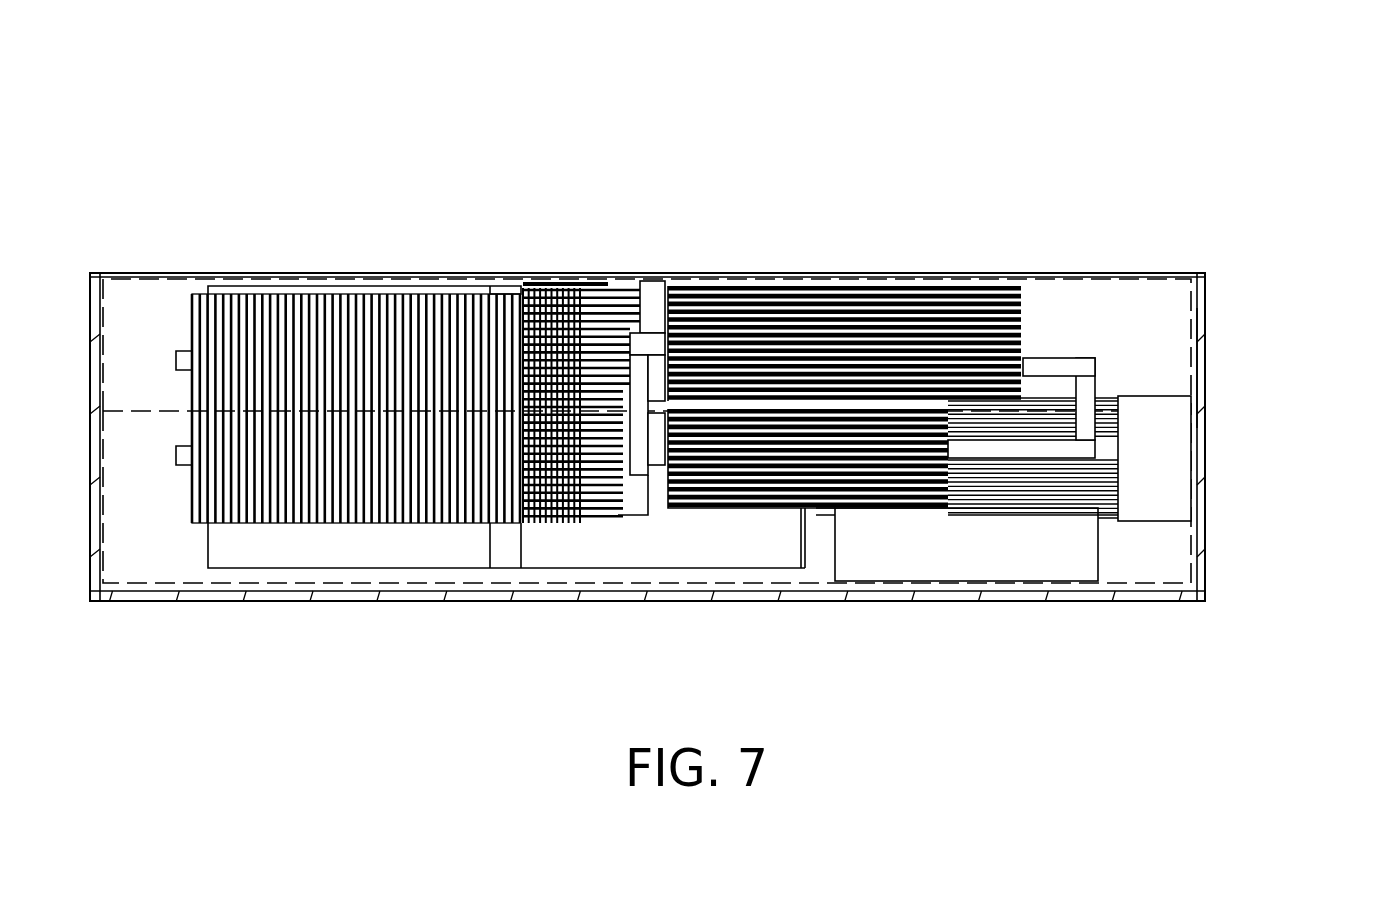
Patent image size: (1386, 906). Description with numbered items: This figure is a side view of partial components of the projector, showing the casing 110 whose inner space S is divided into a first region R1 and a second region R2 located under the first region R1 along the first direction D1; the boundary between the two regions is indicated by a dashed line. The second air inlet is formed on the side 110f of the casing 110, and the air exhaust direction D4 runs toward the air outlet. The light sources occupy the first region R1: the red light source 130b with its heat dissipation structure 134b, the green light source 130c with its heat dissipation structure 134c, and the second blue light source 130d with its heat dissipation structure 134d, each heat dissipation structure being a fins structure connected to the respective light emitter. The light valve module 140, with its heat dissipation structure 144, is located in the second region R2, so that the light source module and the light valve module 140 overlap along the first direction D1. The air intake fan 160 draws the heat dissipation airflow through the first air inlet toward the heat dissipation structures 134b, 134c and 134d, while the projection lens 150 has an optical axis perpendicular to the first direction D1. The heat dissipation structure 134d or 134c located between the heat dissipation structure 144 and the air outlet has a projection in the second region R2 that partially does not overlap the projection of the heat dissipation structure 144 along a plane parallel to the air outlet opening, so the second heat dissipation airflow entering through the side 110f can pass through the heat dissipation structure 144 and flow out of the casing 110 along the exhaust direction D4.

The casing 110 is at (120, 560).
The side of casing 110f is at (1213, 357).
The first region R1 is at (141, 268).
The second region R2 is at (230, 578).
The inner space S is at (82, 45).
The red light source 130b is at (348, 356).
The heat dissipation structure 134b is at (322, 310).
The green light source 130c is at (594, 356).
The heat dissipation structure 134c is at (600, 315).
The second blue light source 130d is at (844, 348).
The heat dissipation structure 134d is at (830, 310).
The light valve module 140 is at (1088, 488).
The heat dissipation structure 144 is at (1060, 497).
The projection lens 150 is at (1037, 397).
The air intake fan 160 is at (535, 545).
The first direction D1 is at (1229, 553).
The air exhaust direction D4 is at (1218, 459).